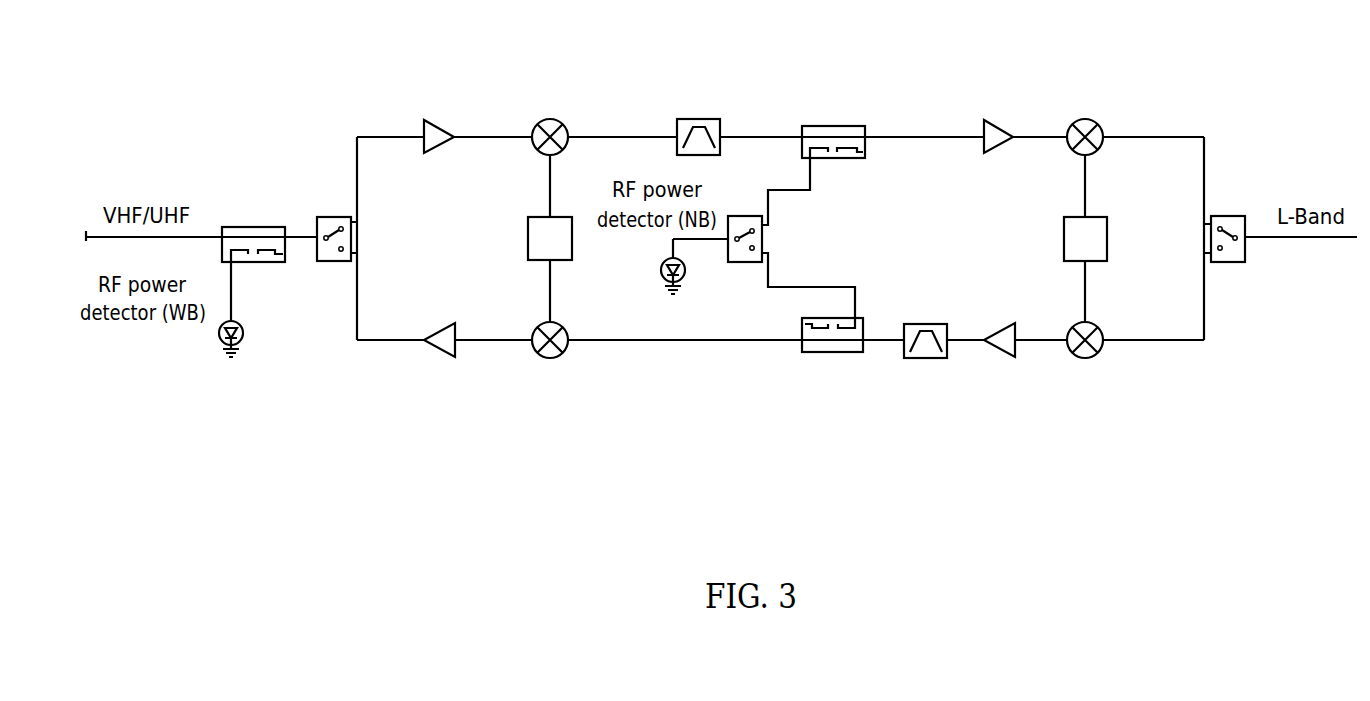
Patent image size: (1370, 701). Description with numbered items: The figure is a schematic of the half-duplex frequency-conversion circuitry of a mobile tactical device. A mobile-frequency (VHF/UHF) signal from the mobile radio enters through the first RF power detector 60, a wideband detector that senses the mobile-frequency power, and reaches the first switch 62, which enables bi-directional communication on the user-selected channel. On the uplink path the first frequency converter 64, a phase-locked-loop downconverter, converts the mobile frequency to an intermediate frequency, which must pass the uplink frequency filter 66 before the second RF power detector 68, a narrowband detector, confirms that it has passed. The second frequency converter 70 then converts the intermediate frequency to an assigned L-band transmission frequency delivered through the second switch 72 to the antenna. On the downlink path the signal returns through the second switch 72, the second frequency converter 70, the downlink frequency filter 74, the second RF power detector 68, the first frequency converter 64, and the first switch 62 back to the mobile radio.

The first RF power detector 60 is at (253, 227).
The first switch 62 is at (337, 217).
The first frequency converter 64 is at (528, 225).
The uplink frequency filter 66 is at (712, 119).
The second RF power detector 68 is at (742, 262).
The second frequency converter 70 is at (1103, 217).
The second switch 72 is at (1237, 216).
The downlink frequency filter 74 is at (917, 358).